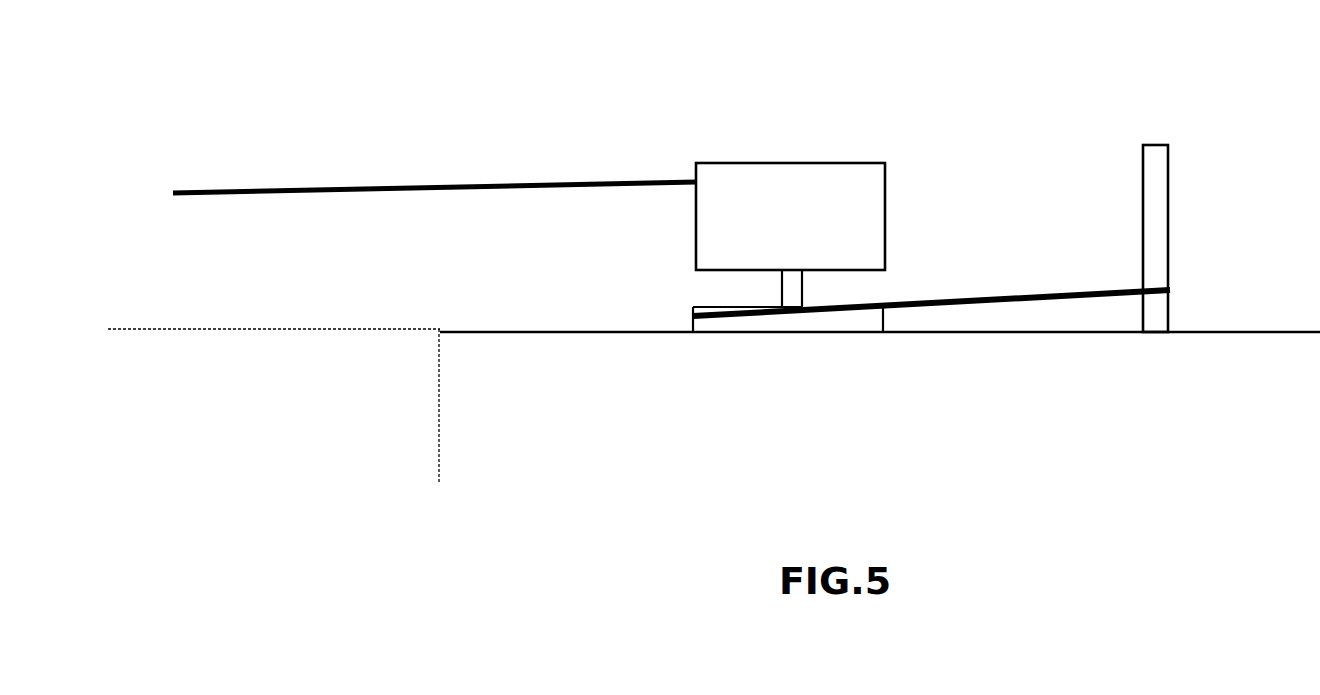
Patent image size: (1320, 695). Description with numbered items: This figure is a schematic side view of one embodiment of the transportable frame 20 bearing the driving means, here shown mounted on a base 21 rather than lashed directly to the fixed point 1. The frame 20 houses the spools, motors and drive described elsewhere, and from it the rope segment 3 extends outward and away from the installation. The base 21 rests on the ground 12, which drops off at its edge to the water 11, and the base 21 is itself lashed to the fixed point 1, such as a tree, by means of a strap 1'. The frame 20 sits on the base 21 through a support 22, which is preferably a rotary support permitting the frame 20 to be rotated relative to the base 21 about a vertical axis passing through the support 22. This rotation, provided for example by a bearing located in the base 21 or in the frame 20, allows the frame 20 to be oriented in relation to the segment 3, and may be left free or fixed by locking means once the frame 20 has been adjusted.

The fixed point 1 is at (1189, 234).
The strap 1' is at (931, 241).
The segment 3 is at (305, 186).
The water 11 is at (283, 409).
The ground 12 is at (804, 429).
The frame 20 is at (809, 163).
The base 21 is at (862, 323).
The rotary support 22 is at (790, 293).